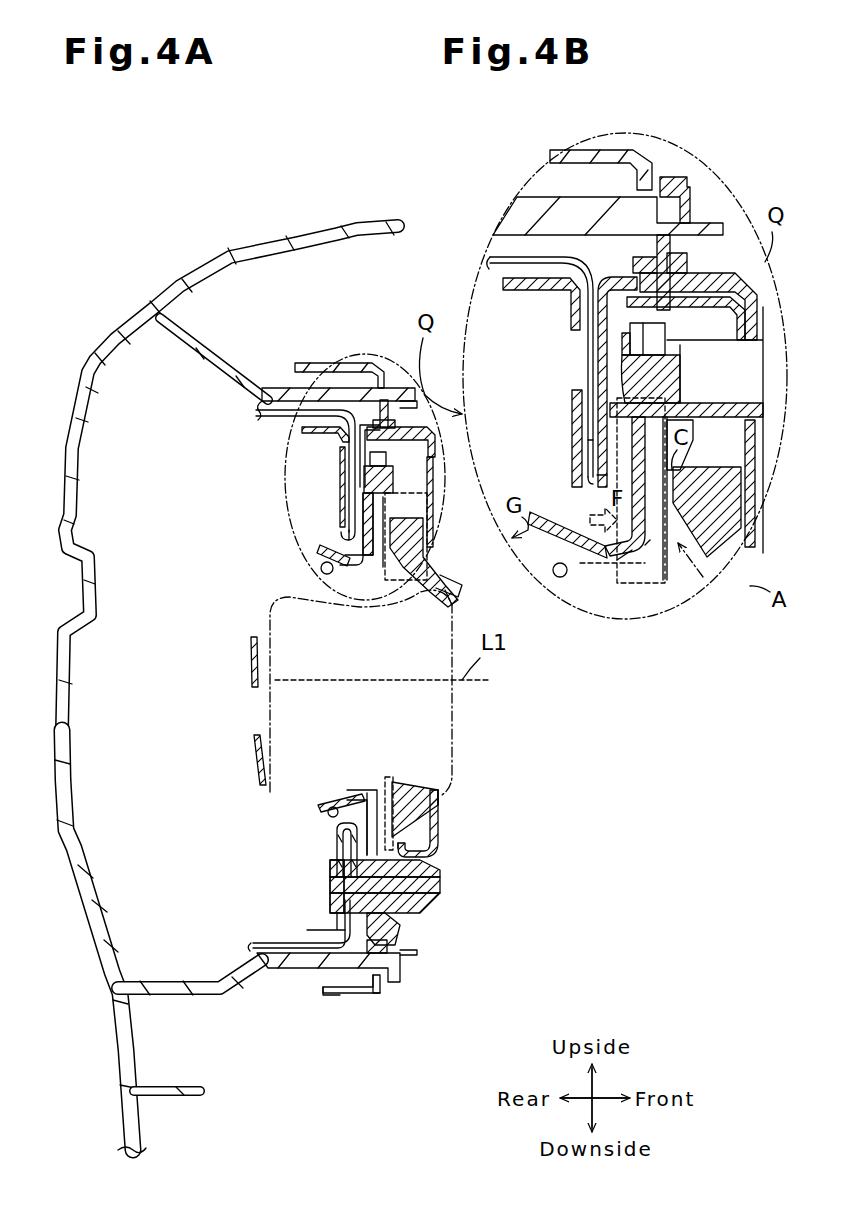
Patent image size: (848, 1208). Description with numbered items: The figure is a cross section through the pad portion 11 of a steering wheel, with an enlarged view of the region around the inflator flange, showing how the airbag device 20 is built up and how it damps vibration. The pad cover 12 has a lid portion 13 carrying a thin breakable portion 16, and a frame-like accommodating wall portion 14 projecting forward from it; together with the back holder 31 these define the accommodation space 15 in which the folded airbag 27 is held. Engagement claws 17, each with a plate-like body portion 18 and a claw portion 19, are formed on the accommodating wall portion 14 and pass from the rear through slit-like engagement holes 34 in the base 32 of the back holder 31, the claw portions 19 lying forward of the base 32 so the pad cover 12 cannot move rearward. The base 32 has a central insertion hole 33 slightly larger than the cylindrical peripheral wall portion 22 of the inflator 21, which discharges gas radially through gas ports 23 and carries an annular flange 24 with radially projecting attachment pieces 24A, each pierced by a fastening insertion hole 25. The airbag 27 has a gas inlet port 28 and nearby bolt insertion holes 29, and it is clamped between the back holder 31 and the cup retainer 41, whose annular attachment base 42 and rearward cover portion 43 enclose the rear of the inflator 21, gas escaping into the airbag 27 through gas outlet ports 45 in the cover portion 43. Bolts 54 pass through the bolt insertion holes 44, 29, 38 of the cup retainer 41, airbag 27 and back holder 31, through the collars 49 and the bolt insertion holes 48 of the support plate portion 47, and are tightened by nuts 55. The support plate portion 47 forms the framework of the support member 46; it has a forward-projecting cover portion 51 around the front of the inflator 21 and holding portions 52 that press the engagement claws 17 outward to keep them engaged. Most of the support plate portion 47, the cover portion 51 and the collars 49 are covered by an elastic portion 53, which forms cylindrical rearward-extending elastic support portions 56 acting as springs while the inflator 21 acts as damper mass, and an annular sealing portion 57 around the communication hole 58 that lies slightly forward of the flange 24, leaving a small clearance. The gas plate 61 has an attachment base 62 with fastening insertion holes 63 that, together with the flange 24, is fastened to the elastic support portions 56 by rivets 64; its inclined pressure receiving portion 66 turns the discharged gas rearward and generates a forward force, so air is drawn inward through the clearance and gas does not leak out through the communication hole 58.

In FIG. 4A, the pad portion 11 is at (104, 198).
In FIG. 4A, the pad cover 12 is at (80, 378).
In FIG. 4A, the lid portion 13 is at (68, 765).
In FIG. 4A, the accommodating wall portion 14 is at (192, 343).
In FIG. 4A, the accommodation space 15 is at (105, 645).
In FIG. 4A, the breakable portion 16 is at (66, 531).
In FIG. 4A, the engagement claw 17 is at (412, 1017).
In FIG. 4B, the engagement claw 17 is at (742, 116).
In FIG. 4A, the body portion 18 is at (347, 985).
In FIG. 4B, the body portion 18 is at (650, 160).
In FIG. 4A, the claw portion 19 is at (384, 982).
In FIG. 4B, the claw portion 19 is at (685, 178).
In FIG. 4A, the airbag device 20 is at (130, 604).
In FIG. 4A, the inflator 21 is at (458, 553).
In FIG. 4A, the peripheral wall portion 22 is at (316, 792).
In FIG. 4B, the peripheral wall portion 22 is at (700, 575).
In FIG. 4A, the gas port 23 is at (320, 570).
In FIG. 4B, the gas port 23 is at (558, 580).
In FIG. 4A, the flange 24 is at (389, 777).
In FIG. 4B, the flange 24 is at (622, 490).
In FIG. 4B, the attachment piece 24A is at (690, 588).
In FIG. 4B, the fastening insertion hole 25 is at (668, 365).
In FIG. 4A, the airbag 27 is at (258, 420).
In FIG. 4B, the airbag 27 is at (490, 262).
In FIG. 4A, the gas inlet port 28 is at (338, 530).
In FIG. 4B, the gas inlet port 28 is at (596, 476).
In FIG. 4A, the bolt insertion hole 29 is at (340, 883).
In FIG. 4A, the back holder 31 is at (301, 362).
In FIG. 4B, the back holder 31 is at (549, 160).
In FIG. 4B, the base 32 is at (586, 440).
In FIG. 4A, the insertion hole 33 is at (337, 826).
In FIG. 4B, the insertion hole 33 is at (598, 492).
In FIG. 4A, the engagement hole 34 is at (400, 956).
In FIG. 4B, the engagement hole 34 is at (646, 254).
In FIG. 4A, the bolt insertion hole 38 is at (336, 914).
In FIG. 4B, the cup retainer 41 is at (521, 292).
In FIG. 4B, the attachment base 42 is at (570, 403).
In FIG. 4A, the cover portion 43 is at (250, 660).
In FIG. 4A, the bolt insertion hole 44 is at (328, 867).
In FIG. 4A, the gas outlet port 45 is at (250, 638).
In FIG. 4A, the support member 46 is at (441, 800).
In FIG. 4B, the support member 46 is at (741, 272).
In FIG. 4A, the support plate portion 47 is at (436, 846).
In FIG. 4B, the support plate portion 47 is at (745, 296).
In FIG. 4A, the bolt insertion hole 48 is at (432, 870).
In FIG. 4A, the collar 49 is at (403, 930).
In FIG. 4A, the cover portion 51 is at (460, 590).
In FIG. 4A, the holding portion 52 is at (322, 966).
In FIG. 4B, the holding portion 52 is at (700, 205).
In FIG. 4A, the elastic portion 53 is at (441, 789).
In FIG. 4A, the bolt 54 is at (441, 890).
In FIG. 4A, the nut 55 is at (425, 905).
In FIG. 4A, the elastic support portion 56 is at (433, 507).
In FIG. 4B, the elastic support portion 56 is at (713, 425).
In FIG. 4A, the sealing portion 57 is at (448, 555).
In FIG. 4B, the sealing portion 57 is at (720, 563).
In FIG. 4A, the communication hole 58 is at (473, 611).
In FIG. 4A, the gas plate 61 is at (366, 790).
In FIG. 4B, the gas plate 61 is at (612, 556).
In FIG. 4B, the attachment base 62 is at (652, 540).
In FIG. 4B, the fastening insertion hole 63 is at (597, 372).
In FIG. 4B, the rivet 64 is at (673, 390).
In FIG. 4A, the pressure receiving portion 66 is at (315, 548).
In FIG. 4B, the pressure receiving portion 66 is at (590, 550).